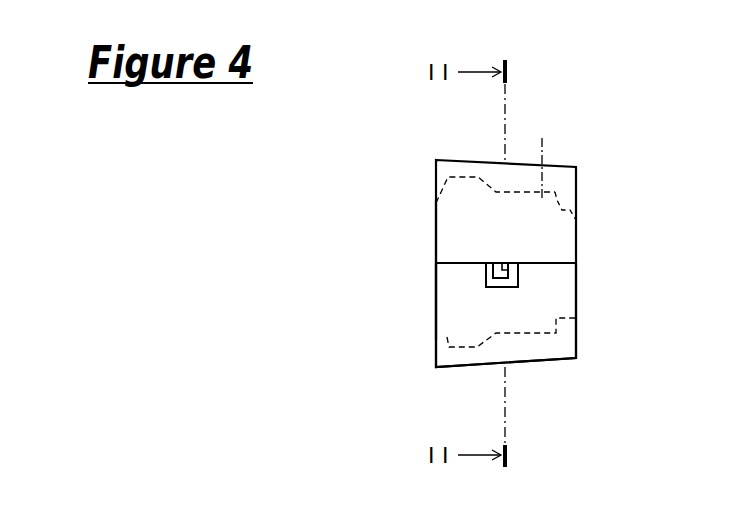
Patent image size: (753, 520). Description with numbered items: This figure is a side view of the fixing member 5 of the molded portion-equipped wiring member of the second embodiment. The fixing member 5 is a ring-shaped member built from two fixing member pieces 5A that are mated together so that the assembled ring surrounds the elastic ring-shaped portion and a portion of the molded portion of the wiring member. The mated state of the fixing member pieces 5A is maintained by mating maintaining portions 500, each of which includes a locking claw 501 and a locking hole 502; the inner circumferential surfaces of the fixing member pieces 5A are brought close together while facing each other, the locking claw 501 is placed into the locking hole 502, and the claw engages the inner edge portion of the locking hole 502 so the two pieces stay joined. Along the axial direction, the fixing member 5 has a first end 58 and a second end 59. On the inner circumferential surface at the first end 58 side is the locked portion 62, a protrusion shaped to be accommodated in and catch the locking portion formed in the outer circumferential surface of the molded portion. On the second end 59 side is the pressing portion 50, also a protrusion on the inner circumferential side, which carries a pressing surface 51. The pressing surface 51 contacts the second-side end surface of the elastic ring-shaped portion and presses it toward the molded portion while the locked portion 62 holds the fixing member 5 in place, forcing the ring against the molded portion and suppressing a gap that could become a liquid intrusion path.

The fixing member 5 is at (599, 130).
The fixing member pieces 5A is at (443, 245).
The pressing portion 50 is at (576, 220).
The pressing surface 51 is at (543, 156).
The first end 58 is at (443, 290).
The second end 59 is at (576, 278).
The locked portion 62 is at (436, 203).
The mating maintaining portions 500 is at (601, 305).
The locking claw 501 is at (508, 270).
The locking hole 502 is at (518, 283).